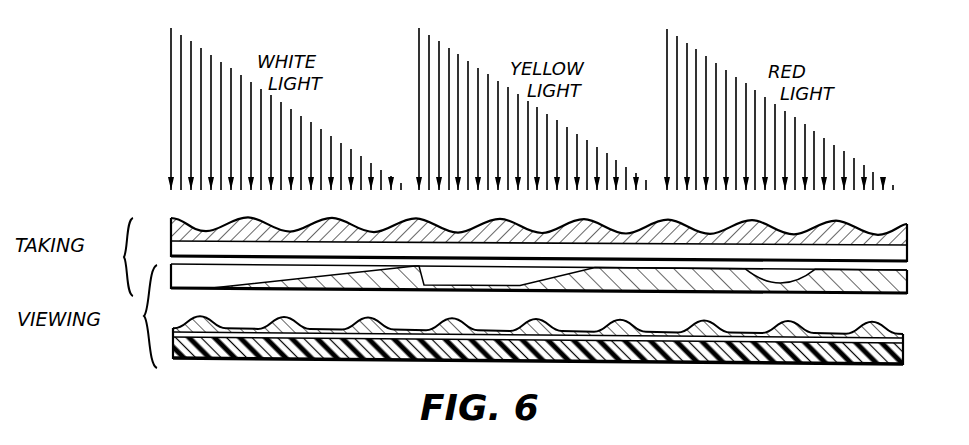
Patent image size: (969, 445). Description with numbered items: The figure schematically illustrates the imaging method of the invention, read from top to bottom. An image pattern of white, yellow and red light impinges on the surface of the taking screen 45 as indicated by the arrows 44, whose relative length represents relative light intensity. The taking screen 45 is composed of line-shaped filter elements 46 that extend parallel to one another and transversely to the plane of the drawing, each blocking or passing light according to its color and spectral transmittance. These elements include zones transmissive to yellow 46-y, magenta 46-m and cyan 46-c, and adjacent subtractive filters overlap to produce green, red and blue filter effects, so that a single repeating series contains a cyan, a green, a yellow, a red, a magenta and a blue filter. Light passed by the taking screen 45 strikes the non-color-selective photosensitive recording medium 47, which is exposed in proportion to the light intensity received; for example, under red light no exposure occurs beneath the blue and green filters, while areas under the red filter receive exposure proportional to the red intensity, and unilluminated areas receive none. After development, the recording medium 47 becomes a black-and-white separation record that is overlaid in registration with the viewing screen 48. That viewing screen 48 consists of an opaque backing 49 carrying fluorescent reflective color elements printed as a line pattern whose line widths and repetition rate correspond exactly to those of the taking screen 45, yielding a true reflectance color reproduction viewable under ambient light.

The arrows 44 is at (398, 75).
The taking screen 45 is at (554, 227).
The filter elements 46 is at (360, 212).
The magenta filter element 46-m is at (603, 221).
The cyan filter element 46-c is at (693, 222).
The yellow filter element 46-y is at (763, 222).
The photosensitive recording medium 47 is at (910, 289).
The viewing screen 48 is at (548, 357).
The opaque backing 49 is at (807, 363).